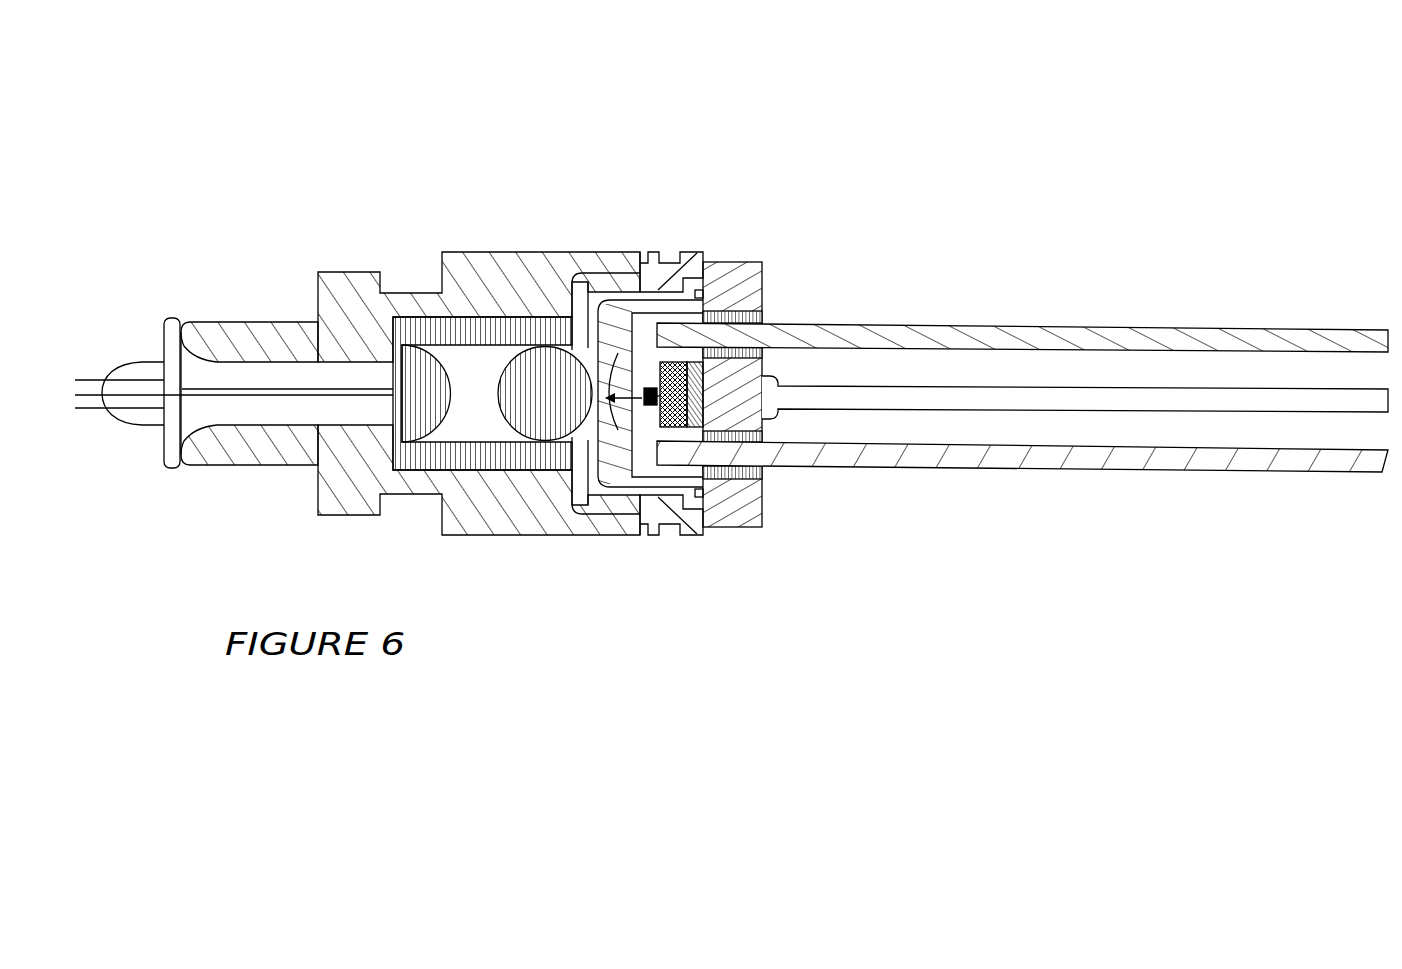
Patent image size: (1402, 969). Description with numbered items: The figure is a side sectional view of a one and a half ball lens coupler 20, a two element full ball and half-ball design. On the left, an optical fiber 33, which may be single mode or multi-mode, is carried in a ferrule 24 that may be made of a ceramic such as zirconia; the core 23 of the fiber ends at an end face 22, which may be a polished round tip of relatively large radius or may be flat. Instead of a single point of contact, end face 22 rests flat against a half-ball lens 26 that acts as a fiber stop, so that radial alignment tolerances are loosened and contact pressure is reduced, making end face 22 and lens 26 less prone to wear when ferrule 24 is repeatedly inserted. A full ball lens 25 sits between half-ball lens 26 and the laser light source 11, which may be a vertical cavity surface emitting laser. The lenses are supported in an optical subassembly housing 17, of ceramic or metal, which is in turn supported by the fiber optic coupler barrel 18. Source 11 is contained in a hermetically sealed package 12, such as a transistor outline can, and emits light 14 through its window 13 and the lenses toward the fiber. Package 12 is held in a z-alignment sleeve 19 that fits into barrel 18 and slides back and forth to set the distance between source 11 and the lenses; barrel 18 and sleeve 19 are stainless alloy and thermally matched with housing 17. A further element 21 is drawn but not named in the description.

The laser light source 11 is at (648, 407).
The hermetically sealed package 12 is at (704, 300).
The window 13 is at (608, 377).
The light 14 is at (621, 417).
The optical subassembly housing 17 is at (493, 330).
The fiber optic coupler barrel 18 is at (549, 541).
The z-alignment sleeve 19 is at (694, 250).
The coupler 20 is at (1055, 234).
The ferrule 21 is at (207, 427).
The fiber end face 22 is at (402, 397).
The core 23 is at (262, 396).
The ferrule 24 is at (166, 470).
The ball lens 25 is at (668, 532).
The half-ball lens 26 is at (440, 360).
The optical fiber 33 is at (87, 372).